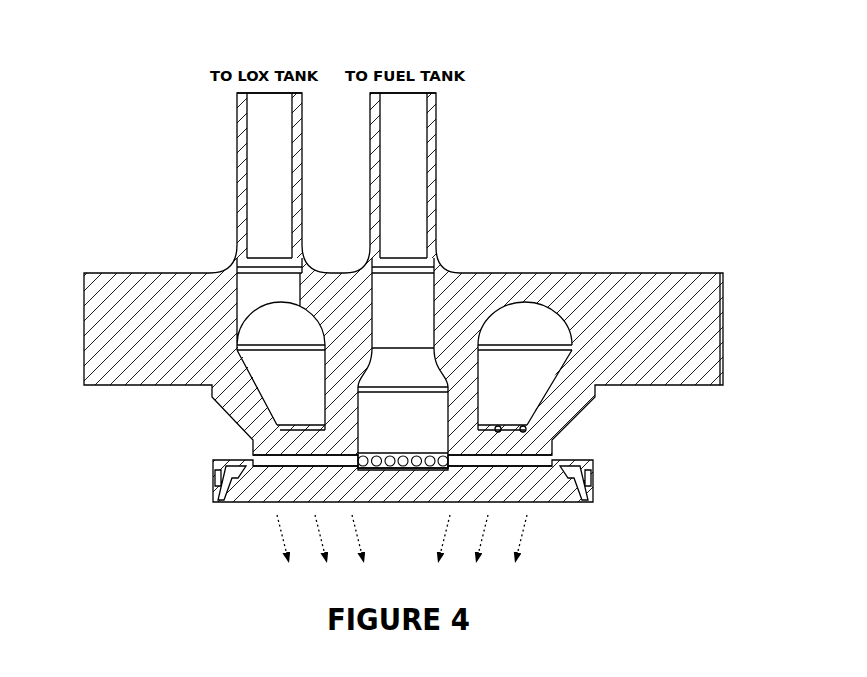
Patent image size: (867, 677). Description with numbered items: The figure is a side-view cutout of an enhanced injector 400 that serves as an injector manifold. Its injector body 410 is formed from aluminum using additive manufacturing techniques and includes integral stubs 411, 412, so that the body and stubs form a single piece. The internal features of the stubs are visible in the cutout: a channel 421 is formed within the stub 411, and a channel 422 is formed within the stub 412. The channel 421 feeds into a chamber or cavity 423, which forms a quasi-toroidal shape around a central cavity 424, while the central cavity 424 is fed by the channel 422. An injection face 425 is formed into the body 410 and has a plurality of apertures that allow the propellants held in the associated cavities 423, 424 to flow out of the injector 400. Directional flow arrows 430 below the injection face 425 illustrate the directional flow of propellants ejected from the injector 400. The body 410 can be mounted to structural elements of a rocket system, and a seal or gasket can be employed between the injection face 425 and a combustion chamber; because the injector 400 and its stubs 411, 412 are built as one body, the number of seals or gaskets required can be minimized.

The injector 400 is at (116, 110).
The injector body 410 is at (622, 273).
The stub 411 is at (235, 170).
The stub 412 is at (440, 172).
The channel 421 is at (269, 225).
The channel 422 is at (403, 225).
The chamber or cavity 423 is at (404, 352).
The central cavity 424 is at (403, 370).
The injection face 425 is at (285, 460).
The directional flow arrows 430 is at (402, 539).